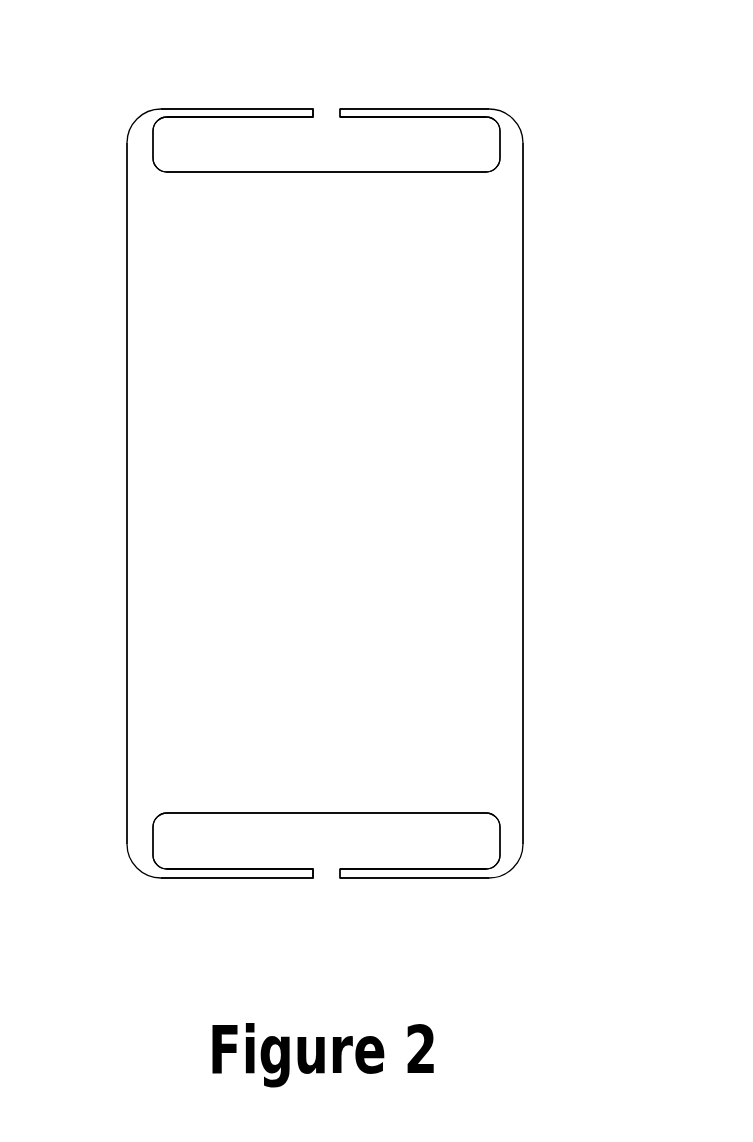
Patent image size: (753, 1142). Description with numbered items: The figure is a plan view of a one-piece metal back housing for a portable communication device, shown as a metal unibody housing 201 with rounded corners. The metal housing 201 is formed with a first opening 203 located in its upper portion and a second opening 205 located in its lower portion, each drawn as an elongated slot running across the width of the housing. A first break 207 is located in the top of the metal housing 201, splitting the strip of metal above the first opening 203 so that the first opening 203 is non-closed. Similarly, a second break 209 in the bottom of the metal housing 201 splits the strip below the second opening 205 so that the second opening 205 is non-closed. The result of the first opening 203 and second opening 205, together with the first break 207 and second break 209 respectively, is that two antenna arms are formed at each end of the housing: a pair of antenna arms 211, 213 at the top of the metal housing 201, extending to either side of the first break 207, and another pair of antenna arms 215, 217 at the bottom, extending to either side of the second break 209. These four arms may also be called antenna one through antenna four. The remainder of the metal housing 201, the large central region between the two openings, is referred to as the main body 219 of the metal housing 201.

The metal unibody housing 201 is at (130, 68).
The first opening 203 is at (405, 150).
The second opening 205 is at (448, 840).
The first break 207 is at (327, 112).
The second break 209 is at (326, 878).
The antenna arm 211 is at (265, 108).
The antenna arm 213 is at (378, 108).
The antenna arm 215 is at (270, 876).
The antenna arm 217 is at (380, 878).
The main body 219 is at (433, 473).